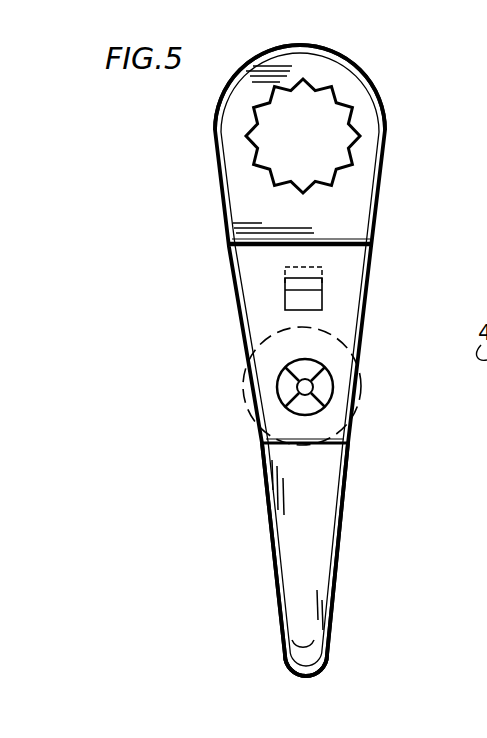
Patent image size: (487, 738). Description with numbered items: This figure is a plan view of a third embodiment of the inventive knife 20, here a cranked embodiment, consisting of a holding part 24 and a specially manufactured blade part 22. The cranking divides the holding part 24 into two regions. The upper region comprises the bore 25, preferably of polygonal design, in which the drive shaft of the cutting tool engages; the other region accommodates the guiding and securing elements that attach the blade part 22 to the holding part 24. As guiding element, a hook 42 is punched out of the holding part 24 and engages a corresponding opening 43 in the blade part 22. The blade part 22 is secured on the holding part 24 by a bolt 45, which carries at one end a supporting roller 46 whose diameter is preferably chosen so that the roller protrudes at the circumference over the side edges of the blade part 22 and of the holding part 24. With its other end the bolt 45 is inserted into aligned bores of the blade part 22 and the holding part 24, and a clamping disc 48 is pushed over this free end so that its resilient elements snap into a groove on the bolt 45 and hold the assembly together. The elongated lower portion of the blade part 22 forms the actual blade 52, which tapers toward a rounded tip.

The knife 20 is at (423, 170).
The blade part 22 is at (317, 581).
The holding part 24 is at (363, 143).
The bore 25 is at (320, 88).
The hook 42 is at (323, 292).
The opening 43 is at (323, 278).
The bolt 45 is at (278, 390).
The supporting roller 46 is at (265, 338).
The clamping disc 48 is at (278, 363).
The blade 52 is at (320, 675).